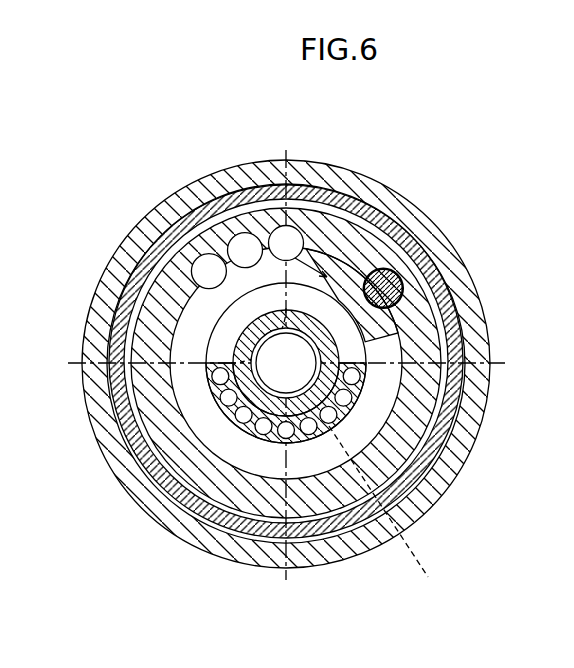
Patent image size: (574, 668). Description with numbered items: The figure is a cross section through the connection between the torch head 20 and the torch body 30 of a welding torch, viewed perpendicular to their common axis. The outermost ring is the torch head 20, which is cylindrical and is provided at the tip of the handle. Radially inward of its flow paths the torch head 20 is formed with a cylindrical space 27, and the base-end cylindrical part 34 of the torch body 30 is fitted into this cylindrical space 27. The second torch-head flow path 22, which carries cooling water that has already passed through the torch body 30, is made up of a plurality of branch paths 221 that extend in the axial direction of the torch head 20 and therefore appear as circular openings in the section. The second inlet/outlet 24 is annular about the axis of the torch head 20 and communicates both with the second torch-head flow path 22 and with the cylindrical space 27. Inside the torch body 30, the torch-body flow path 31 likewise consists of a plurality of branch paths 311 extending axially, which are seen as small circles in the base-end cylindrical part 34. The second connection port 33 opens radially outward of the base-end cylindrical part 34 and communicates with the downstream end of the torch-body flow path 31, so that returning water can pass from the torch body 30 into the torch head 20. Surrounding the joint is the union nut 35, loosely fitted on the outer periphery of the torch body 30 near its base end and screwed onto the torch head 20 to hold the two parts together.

The torch head 20 is at (466, 297).
The union nut 35 is at (142, 252).
The second inlet/outlet 24 is at (198, 330).
The second connection port 33 is at (333, 312).
The second torch-head flow path 22 is at (250, 201).
The branch paths 221 is at (279, 228).
The torch body 30 is at (197, 453).
The base-end cylindrical part 34 is at (216, 465).
The torch-body flow path 31 is at (279, 495).
The branch paths 311 is at (285, 430).
The cylindrical space 27 is at (384, 514).